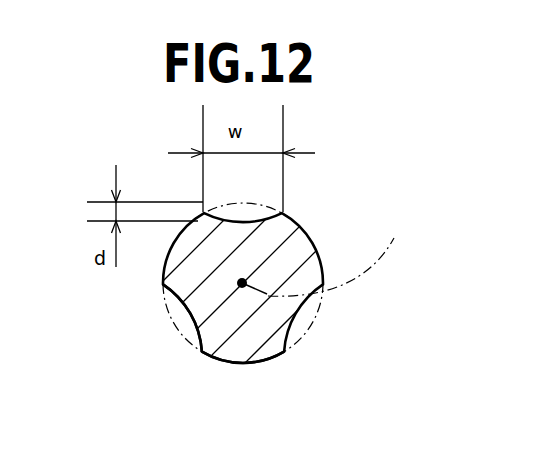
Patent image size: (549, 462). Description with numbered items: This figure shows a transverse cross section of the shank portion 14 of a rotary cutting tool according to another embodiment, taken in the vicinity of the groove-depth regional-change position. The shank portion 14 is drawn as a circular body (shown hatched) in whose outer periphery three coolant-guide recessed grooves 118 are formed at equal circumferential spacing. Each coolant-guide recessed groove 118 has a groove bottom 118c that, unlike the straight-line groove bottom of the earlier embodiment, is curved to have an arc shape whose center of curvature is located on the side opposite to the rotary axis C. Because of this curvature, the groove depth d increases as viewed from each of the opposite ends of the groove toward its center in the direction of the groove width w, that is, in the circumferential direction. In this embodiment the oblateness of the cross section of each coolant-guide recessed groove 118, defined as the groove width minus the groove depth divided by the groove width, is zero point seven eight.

The coolant-guide recessed groove 118 is at (325, 347).
The groove bottom 118c is at (192, 330).
The shank portion 14 is at (232, 348).